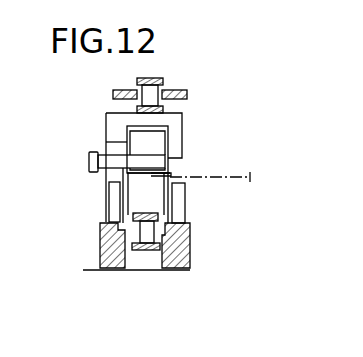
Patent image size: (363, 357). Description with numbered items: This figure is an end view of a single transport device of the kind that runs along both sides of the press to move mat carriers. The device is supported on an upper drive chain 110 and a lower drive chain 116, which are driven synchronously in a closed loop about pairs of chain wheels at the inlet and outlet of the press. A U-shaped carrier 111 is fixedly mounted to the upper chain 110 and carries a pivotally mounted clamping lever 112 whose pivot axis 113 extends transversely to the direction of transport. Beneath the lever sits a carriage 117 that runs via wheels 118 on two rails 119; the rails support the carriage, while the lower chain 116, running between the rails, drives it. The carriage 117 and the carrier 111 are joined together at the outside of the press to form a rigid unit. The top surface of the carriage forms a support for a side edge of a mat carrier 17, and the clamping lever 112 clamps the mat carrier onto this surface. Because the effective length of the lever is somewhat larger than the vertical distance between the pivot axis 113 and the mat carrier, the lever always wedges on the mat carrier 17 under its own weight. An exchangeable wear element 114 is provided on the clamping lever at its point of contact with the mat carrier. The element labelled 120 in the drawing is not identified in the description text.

The upper drive chain 110 is at (155, 78).
The U-shaped carrier 111 is at (184, 116).
The clamping lever 112 is at (170, 133).
The pivot axis 113 is at (107, 143).
The exchangeable wear element 114 is at (178, 172).
The lower drive chain 116 is at (92, 157).
The carriage 117 is at (176, 188).
The wheels 118 is at (107, 220).
The rails 119 is at (100, 252).
The cross shaft 120 is at (112, 175).
The mat carrier 17 is at (250, 178).